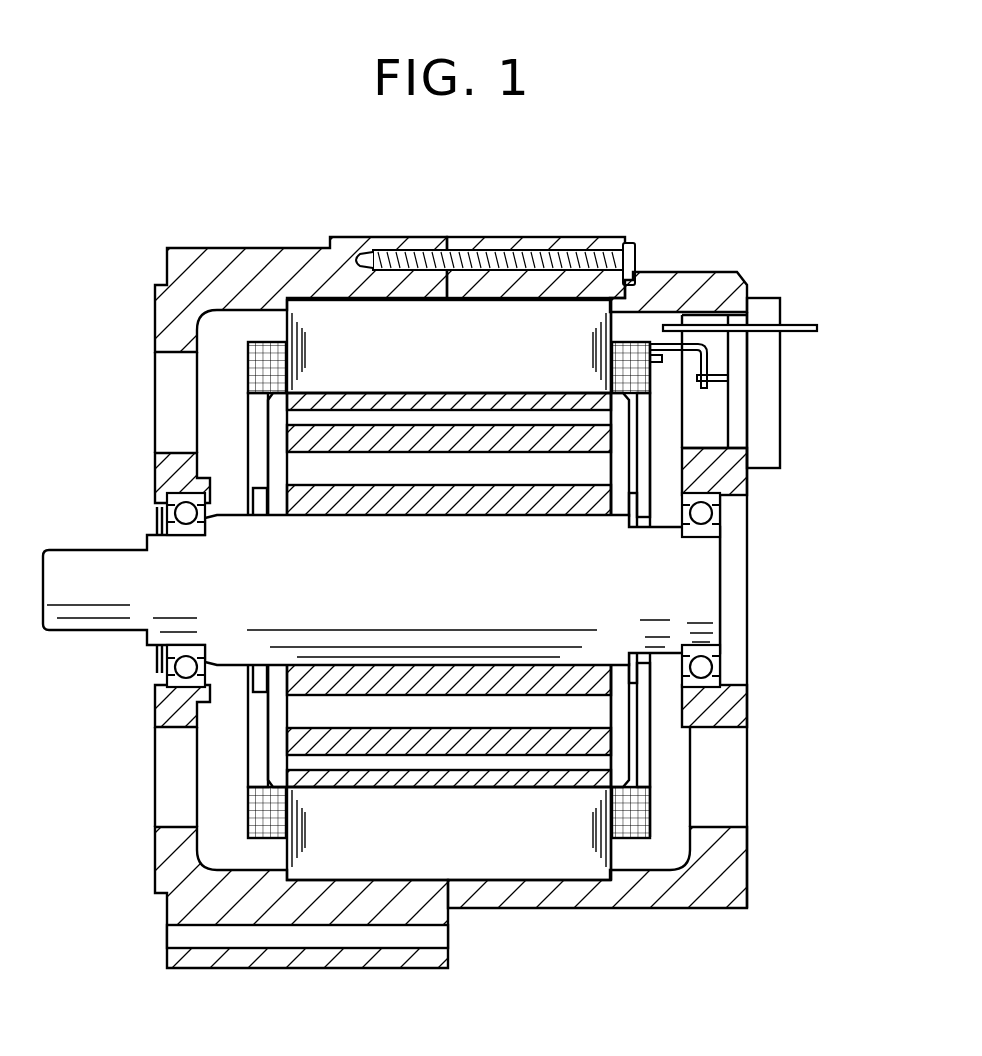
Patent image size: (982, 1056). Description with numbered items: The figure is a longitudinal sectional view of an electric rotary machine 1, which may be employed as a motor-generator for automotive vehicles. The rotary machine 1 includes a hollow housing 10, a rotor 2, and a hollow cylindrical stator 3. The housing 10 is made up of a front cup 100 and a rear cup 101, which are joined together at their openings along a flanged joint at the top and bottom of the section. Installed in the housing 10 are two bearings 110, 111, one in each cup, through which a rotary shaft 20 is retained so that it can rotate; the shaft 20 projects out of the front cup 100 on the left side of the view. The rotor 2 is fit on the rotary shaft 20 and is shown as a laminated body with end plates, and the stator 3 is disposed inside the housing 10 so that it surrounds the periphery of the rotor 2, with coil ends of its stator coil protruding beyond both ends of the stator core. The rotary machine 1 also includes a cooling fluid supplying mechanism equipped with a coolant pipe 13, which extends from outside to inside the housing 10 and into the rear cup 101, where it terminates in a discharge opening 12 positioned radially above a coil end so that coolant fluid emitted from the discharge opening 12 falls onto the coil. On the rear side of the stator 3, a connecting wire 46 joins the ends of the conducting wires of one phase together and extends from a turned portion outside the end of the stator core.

The electric rotary machine 1 is at (817, 234).
The rotor 2 is at (600, 442).
The stator 3 is at (582, 322).
The housing 10 is at (537, 153).
The front cup 100 is at (398, 245).
The rear cup 101 is at (473, 243).
The discharge opening 12 is at (666, 311).
The coolant pipe 13 is at (802, 324).
The rotary shaft 20 is at (95, 612).
The connecting wire 46 is at (662, 358).
The bearing 110 is at (168, 497).
The bearing 111 is at (713, 498).